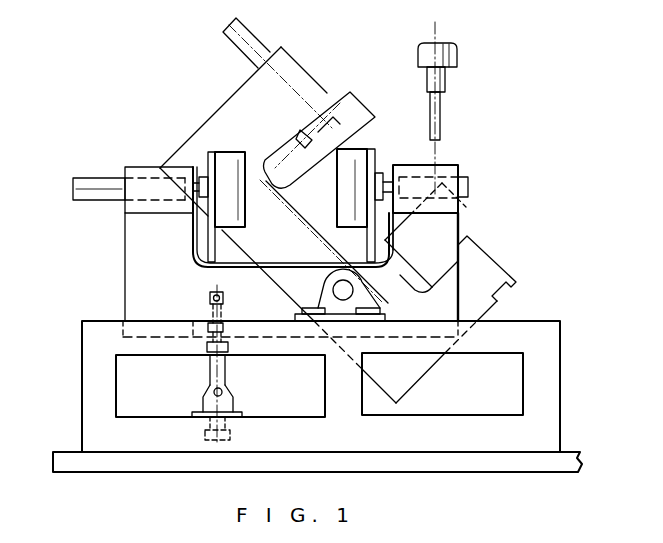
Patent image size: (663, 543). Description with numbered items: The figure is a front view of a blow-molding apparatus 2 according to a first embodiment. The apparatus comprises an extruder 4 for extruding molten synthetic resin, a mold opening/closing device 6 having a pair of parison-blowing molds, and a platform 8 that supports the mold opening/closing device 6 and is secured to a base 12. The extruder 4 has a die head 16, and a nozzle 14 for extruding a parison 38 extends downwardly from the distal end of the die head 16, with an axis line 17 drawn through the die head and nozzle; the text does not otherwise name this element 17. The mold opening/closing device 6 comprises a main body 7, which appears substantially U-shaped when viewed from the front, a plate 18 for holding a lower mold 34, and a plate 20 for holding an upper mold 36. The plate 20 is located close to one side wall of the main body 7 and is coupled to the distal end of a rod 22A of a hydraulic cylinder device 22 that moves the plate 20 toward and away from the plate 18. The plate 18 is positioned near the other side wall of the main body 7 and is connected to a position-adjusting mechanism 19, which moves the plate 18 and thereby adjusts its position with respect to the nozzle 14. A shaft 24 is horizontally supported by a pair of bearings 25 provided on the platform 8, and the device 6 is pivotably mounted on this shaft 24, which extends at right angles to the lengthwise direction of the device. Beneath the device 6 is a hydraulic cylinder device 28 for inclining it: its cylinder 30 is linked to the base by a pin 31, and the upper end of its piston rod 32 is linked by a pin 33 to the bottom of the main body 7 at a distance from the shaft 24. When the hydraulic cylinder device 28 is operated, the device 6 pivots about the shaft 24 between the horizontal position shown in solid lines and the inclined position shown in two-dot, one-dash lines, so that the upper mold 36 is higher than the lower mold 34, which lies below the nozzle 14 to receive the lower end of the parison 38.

The blow-molding apparatus 2 is at (551, 219).
The extruder 4 is at (470, 62).
The mold opening/closing device 6 is at (120, 126).
The main body 7 is at (126, 250).
The platform 8 is at (82, 356).
The base 12 is at (68, 458).
The nozzle 14 is at (447, 85).
The die head 16 is at (418, 56).
The indicator axis 17 is at (434, 30).
The plate 18 is at (376, 158).
The position-adjusting mechanism 19 is at (466, 184).
The plate 20 is at (204, 176).
The hydraulic cylinder device 22 is at (96, 178).
The rod 22A is at (193, 168).
The shaft 24 is at (341, 283).
The bearings 25 is at (323, 293).
The hydraulic cylinder device 28 is at (196, 368).
The cylinder 30 is at (228, 372).
The pin 31 is at (215, 395).
The piston rod 32 is at (207, 333).
The pin 33 is at (209, 287).
The lower mold 34 is at (348, 184).
The upper mold 36 is at (230, 165).
The parison 38 is at (442, 125).